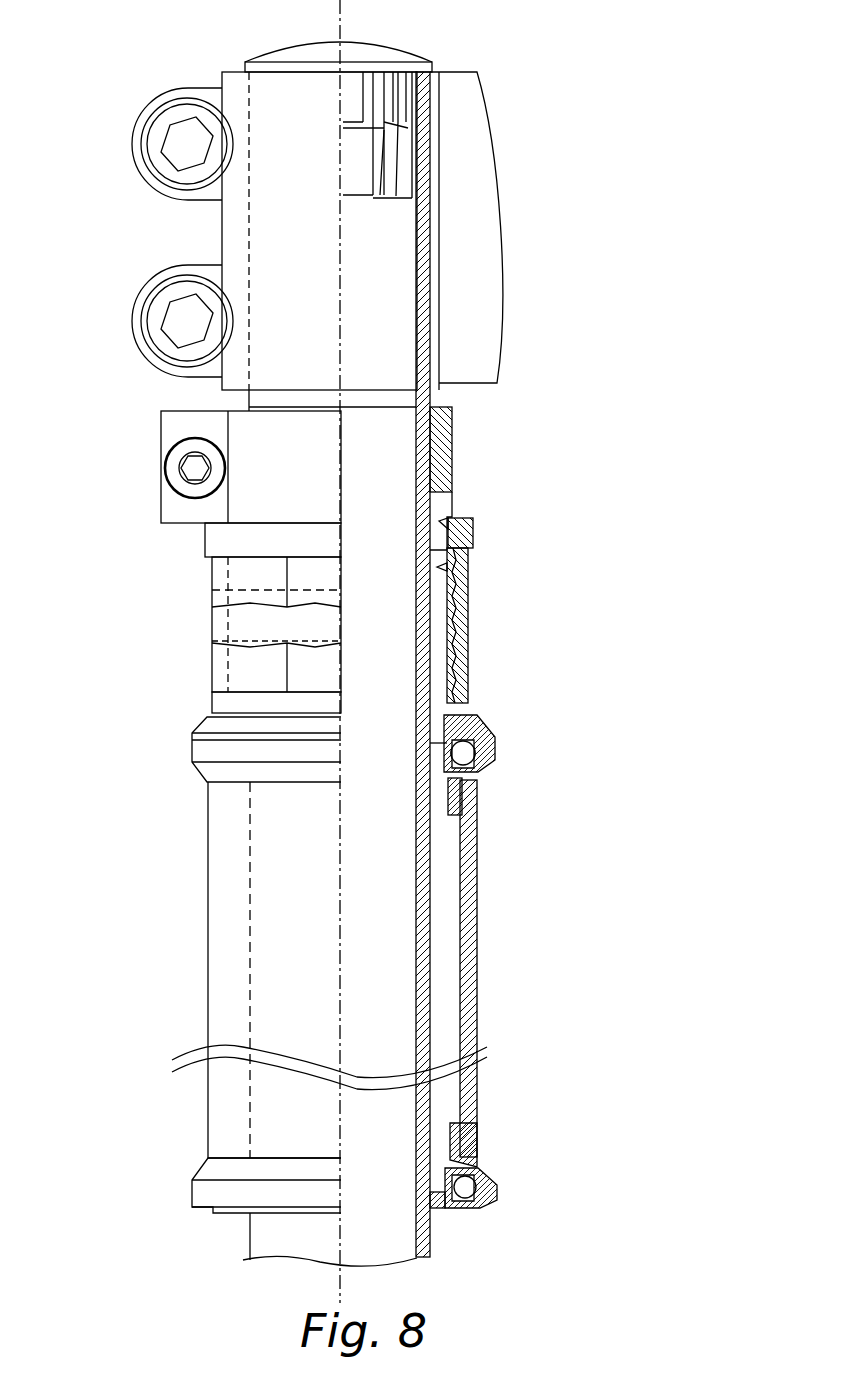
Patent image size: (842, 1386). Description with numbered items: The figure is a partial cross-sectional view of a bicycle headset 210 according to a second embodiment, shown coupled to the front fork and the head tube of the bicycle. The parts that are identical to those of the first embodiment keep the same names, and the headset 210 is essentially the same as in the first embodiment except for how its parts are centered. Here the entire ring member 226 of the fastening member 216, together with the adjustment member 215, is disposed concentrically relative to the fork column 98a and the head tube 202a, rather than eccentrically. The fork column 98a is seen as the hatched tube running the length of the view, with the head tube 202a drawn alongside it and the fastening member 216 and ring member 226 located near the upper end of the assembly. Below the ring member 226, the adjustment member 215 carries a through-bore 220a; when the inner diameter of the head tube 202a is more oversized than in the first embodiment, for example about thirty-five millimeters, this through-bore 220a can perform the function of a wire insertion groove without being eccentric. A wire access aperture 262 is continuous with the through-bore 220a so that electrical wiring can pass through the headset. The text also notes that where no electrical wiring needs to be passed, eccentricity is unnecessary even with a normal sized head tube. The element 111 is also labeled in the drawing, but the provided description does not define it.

The bicycle headset 210 is at (563, 383).
The mounting body 111 is at (232, 232).
The fastening member 216 is at (184, 426).
The ring member 226 is at (440, 435).
The wire access aperture 262 is at (465, 520).
The through-bore 220a is at (437, 567).
The adjustment member 215 is at (470, 688).
The head tube 202a is at (228, 877).
The fork column 98a is at (440, 887).